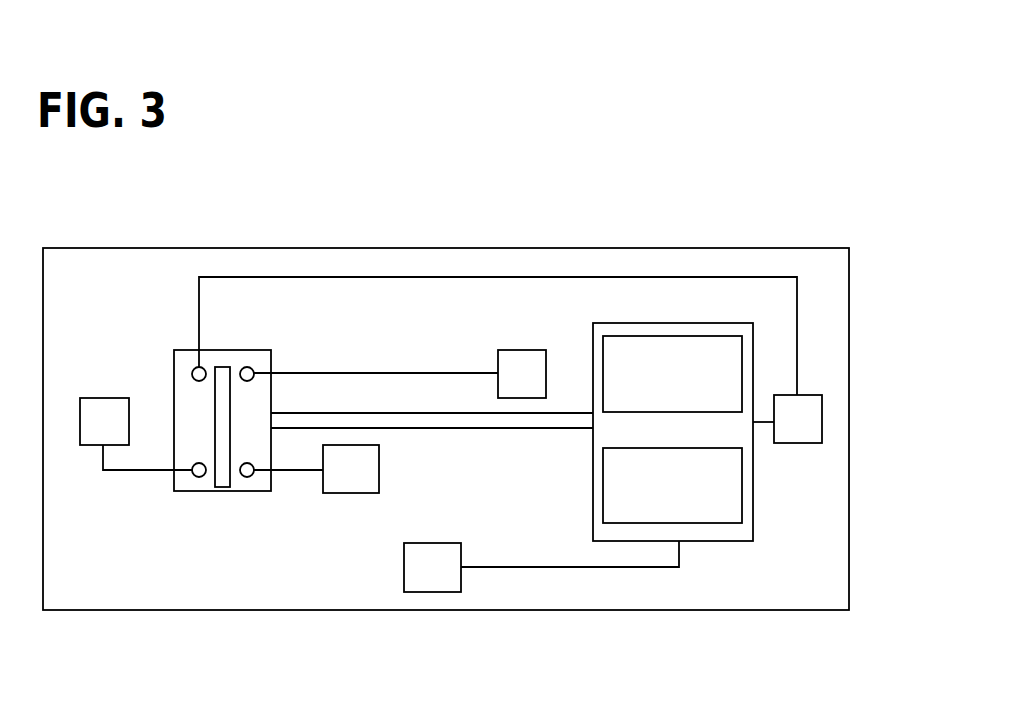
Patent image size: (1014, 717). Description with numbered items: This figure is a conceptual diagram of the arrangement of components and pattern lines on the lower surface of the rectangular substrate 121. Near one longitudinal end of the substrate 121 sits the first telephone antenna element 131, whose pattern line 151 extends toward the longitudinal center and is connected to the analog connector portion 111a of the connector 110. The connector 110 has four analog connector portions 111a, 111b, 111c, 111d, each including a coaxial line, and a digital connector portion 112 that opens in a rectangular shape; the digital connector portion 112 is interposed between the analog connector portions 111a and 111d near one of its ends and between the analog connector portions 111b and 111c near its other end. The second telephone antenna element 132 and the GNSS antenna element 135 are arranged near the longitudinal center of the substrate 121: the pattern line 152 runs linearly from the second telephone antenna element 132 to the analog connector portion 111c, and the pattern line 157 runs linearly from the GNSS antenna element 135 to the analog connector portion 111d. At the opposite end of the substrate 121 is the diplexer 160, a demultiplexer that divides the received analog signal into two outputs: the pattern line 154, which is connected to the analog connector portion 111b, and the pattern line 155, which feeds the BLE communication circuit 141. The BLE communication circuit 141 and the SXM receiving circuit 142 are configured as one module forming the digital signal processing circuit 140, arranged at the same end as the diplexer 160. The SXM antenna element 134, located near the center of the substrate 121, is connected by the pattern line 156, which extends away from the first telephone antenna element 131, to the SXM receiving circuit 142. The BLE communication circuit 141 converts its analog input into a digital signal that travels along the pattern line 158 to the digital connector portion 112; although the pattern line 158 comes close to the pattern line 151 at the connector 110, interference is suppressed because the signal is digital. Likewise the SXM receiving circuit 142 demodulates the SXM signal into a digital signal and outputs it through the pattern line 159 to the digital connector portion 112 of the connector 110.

The connector 110 is at (170, 329).
The analog connector portion 111a is at (199, 477).
The analog connector portion 111b is at (192, 374).
The analog connector portion 111c is at (253, 371).
The analog connector portion 111d is at (247, 477).
The digital connector portion 112 is at (218, 366).
The substrate 121 is at (737, 248).
The first telephone antenna element 131 is at (90, 397).
The second telephone antenna element 132 is at (520, 350).
The SXM antenna element 134 is at (432, 592).
The GNSS antenna element 135 is at (379, 465).
The digital signal processing circuit 140 is at (686, 436).
The BLE communication circuit 141 is at (697, 336).
The SXM receiving circuit 142 is at (723, 525).
The pattern line 151 is at (117, 473).
The pattern line 152 is at (407, 373).
The pattern line 154 is at (630, 277).
The pattern line 155 is at (760, 423).
The pattern line 156 is at (502, 567).
The pattern line 157 is at (307, 470).
The pattern line 158 is at (560, 412).
The pattern line 159 is at (485, 428).
The diplexer 160 is at (822, 418).